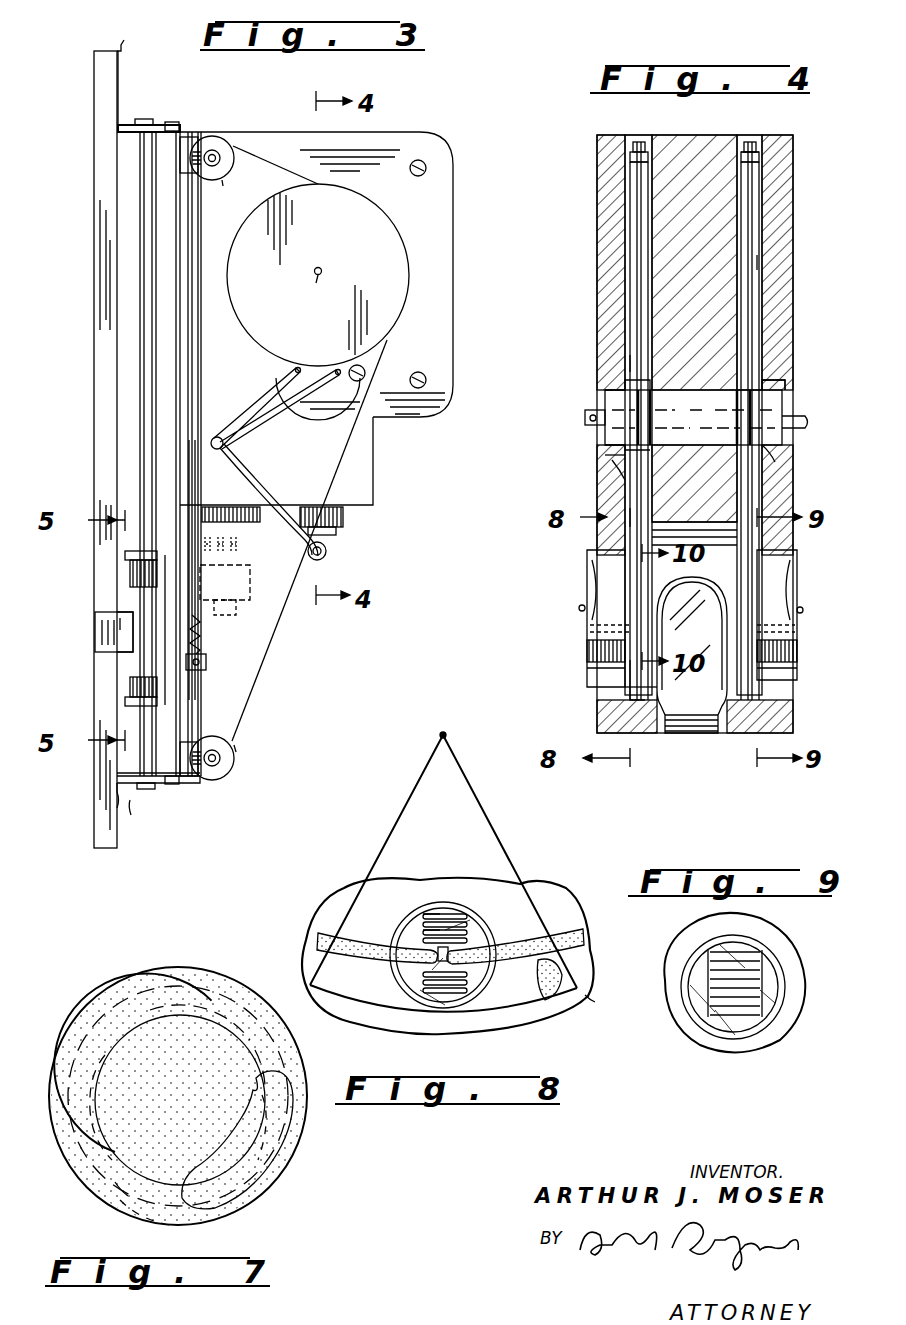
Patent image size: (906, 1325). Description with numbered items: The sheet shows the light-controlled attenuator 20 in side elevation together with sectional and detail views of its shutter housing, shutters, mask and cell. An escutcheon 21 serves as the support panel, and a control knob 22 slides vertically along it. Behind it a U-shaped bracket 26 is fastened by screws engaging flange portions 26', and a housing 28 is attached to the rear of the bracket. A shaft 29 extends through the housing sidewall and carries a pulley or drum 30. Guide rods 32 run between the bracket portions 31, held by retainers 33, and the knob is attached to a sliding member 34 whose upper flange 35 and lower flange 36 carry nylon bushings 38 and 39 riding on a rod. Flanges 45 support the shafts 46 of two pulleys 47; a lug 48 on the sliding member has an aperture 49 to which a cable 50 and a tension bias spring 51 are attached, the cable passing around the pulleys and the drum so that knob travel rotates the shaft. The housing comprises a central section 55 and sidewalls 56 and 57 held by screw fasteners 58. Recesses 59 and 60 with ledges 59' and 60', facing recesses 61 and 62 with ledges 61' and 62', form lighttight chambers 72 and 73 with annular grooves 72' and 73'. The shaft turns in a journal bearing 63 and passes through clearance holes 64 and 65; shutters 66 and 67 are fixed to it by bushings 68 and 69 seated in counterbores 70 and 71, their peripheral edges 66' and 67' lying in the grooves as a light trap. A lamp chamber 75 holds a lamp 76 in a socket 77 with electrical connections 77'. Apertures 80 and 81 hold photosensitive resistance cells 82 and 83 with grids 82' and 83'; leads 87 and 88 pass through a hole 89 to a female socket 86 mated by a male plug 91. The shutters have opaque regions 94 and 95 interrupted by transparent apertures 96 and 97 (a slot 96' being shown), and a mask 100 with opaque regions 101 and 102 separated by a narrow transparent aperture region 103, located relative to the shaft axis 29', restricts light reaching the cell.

In FIG. 3, the light-controlled attenuator 20 is at (122, 44).
In FIG. 3, the escutcheon 21 is at (100, 182).
In FIG. 3, the control knob 22 is at (100, 629).
In FIG. 3, the bracket 26 is at (178, 794).
In FIG. 3, the flange portions 26' is at (158, 449).
In FIG. 3, the housing 28 is at (422, 134).
In FIG. 4, the housing 28 is at (590, 140).
In FIG. 3, the shaft 29 is at (317, 288).
In FIG. 4, the shaft 29 is at (570, 401).
In FIG. 8, the shaft axis 29' is at (443, 856).
In FIG. 3, the pulley or drum 30 is at (333, 252).
In FIG. 3, the bracket portions 31 is at (175, 128).
In FIG. 3, the guide rods 32 is at (140, 232).
In FIG. 3, the retainers 33 is at (156, 118).
In FIG. 3, the sliding member 34 is at (202, 689).
In FIG. 3, the upper flange 35 is at (128, 556).
In FIG. 3, the lower flange 36 is at (125, 700).
In FIG. 3, the bushing 38 is at (135, 576).
In FIG. 3, the bushing 39 is at (135, 688).
In FIG. 3, the flanges 45 is at (192, 140).
In FIG. 3, the pulley shafts 46 is at (218, 152).
In FIG. 3, the pulleys 47 is at (222, 180).
In FIG. 3, the lug 48 is at (200, 668).
In FIG. 3, the aperture 49 is at (202, 660).
In FIG. 3, the cable 50 is at (240, 740).
In FIG. 3, the tension bias spring 51 is at (204, 652).
In FIG. 4, the central section 55 is at (700, 120).
In FIG. 3, the sidewall 56 is at (374, 488).
In FIG. 4, the sidewall 56 is at (775, 320).
In FIG. 4, the sidewall 57 is at (596, 305).
In FIG. 8, the sidewall 57 is at (592, 995).
In FIG. 3, the screw fasteners 58 is at (426, 164).
In FIG. 4, the recess 59 is at (786, 415).
In FIG. 4, the ledge 59' is at (742, 123).
In FIG. 4, the recess 60 is at (596, 415).
In FIG. 4, the ledge 60' is at (644, 123).
In FIG. 4, the recess 61 is at (788, 426).
In FIG. 4, the ledge 61' is at (787, 145).
In FIG. 4, the recess 62 is at (594, 426).
In FIG. 4, the ledge 62' is at (593, 145).
In FIG. 4, the journal bearing 63 is at (695, 412).
In FIG. 4, the clearance hole 64 is at (790, 416).
In FIG. 4, the clearance hole 65 is at (595, 425).
In FIG. 4, the shutter 66 is at (796, 255).
In FIG. 7, the shutter 66 is at (200, 983).
In FIG. 4, the peripheral edge 66' is at (715, 446).
In FIG. 4, the shutter 67 is at (586, 361).
In FIG. 7, the shutter 67 is at (260, 1067).
In FIG. 4, the peripheral edge 67' is at (598, 703).
In FIG. 4, the bushing 68 is at (770, 392).
In FIG. 4, the bushing 69 is at (610, 455).
In FIG. 4, the counterbore 70 is at (780, 462).
In FIG. 4, the counterbore 71 is at (612, 465).
In FIG. 4, the chamber 72 is at (791, 425).
In FIG. 4, the annular groove 72' is at (778, 122).
In FIG. 4, the chamber 73 is at (591, 425).
In FIG. 4, the annular groove 73' is at (596, 172).
In FIG. 4, the lamp chamber 75 is at (728, 700).
In FIG. 4, the lamp 76 is at (700, 654).
In FIG. 3, the socket 77 is at (351, 521).
In FIG. 3, the electrical connections 77' is at (357, 553).
In FIG. 4, the aperture 80 is at (785, 565).
In FIG. 4, the aperture 81 is at (598, 558).
In FIG. 3, the photosensitive resistance cell 82 is at (318, 412).
In FIG. 4, the photosensitive resistance cell 82 is at (711, 653).
In FIG. 9, the photosensitive resistance cell 82 is at (734, 1001).
In FIG. 9, the photosensitive grid 82' is at (732, 1022).
In FIG. 4, the photosensitive resistance cell 83 is at (666, 650).
In FIG. 8, the photosensitive resistance cell 83 is at (456, 926).
In FIG. 8, the photosensitive grid 83' is at (422, 889).
In FIG. 3, the female socket 86 is at (250, 525).
In FIG. 3, the leads 87 is at (268, 444).
In FIG. 4, the leads 87 is at (802, 610).
In FIG. 4, the leads 88 is at (580, 606).
In FIG. 3, the hole 89 is at (217, 436).
In FIG. 3, the male plug 91 is at (250, 568).
In FIG. 7, the opaque region 94 is at (145, 1035).
In FIG. 7, the opaque region 95 is at (135, 1020).
In FIG. 4, the transparent aperture 96 is at (794, 621).
In FIG. 7, the transparent aperture 96 is at (228, 1160).
In FIG. 7, the slot 96' is at (84, 1198).
In FIG. 4, the transparent aperture 97 is at (640, 618).
In FIG. 7, the transparent aperture 97 is at (92, 1078).
In FIG. 4, the mask 100 is at (628, 660).
In FIG. 8, the mask 100 is at (530, 888).
In FIG. 8, the opaque region 101 is at (540, 932).
In FIG. 8, the opaque region 102 is at (345, 935).
In FIG. 8, the transparent aperture region 103 is at (432, 967).